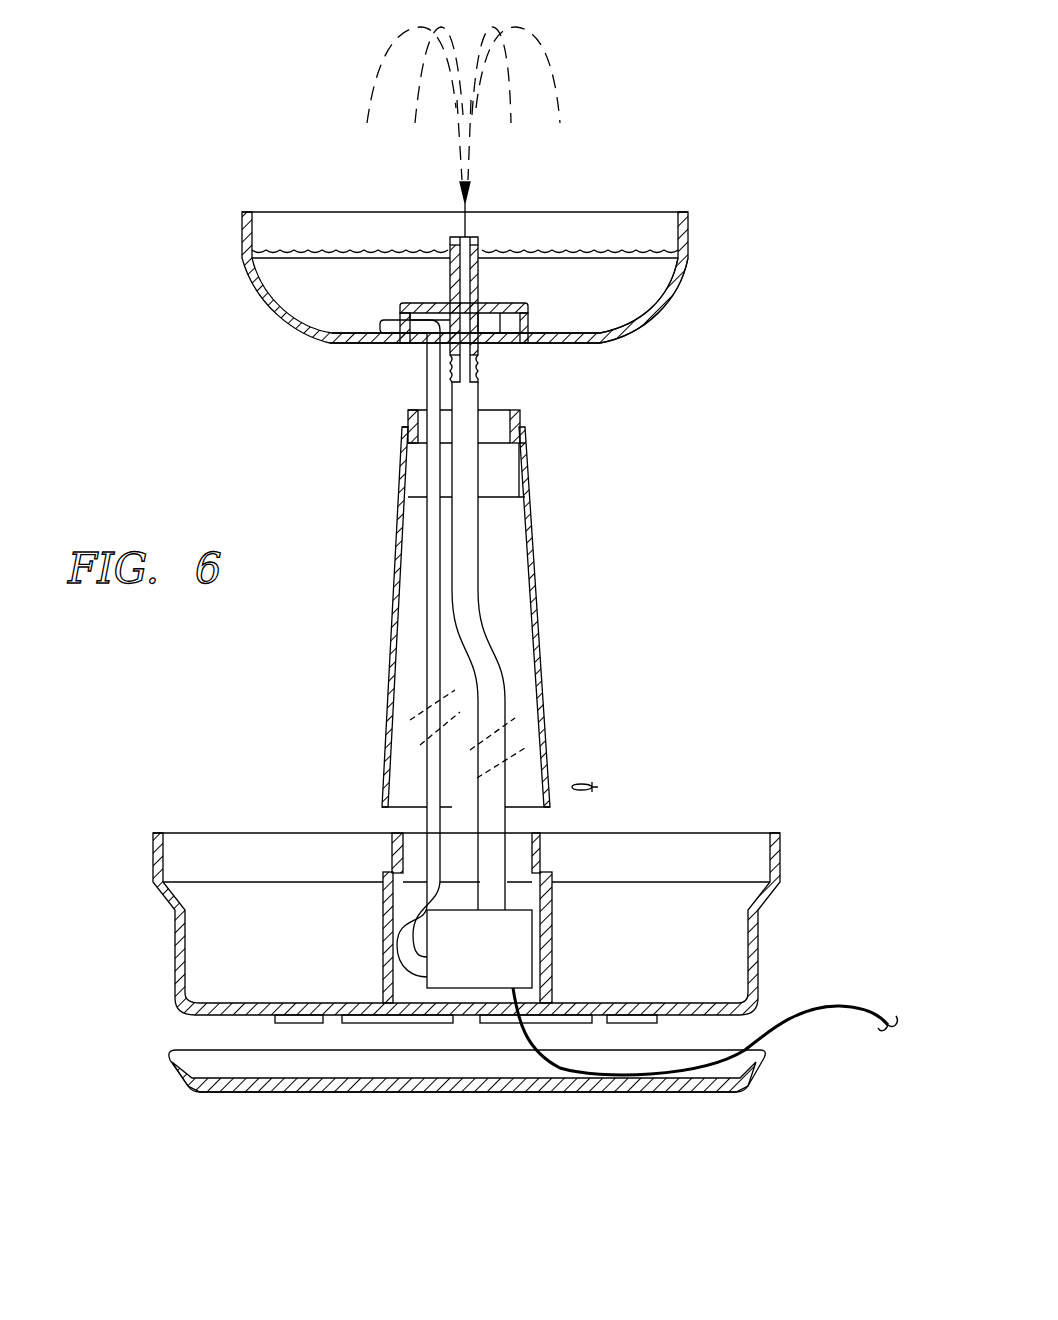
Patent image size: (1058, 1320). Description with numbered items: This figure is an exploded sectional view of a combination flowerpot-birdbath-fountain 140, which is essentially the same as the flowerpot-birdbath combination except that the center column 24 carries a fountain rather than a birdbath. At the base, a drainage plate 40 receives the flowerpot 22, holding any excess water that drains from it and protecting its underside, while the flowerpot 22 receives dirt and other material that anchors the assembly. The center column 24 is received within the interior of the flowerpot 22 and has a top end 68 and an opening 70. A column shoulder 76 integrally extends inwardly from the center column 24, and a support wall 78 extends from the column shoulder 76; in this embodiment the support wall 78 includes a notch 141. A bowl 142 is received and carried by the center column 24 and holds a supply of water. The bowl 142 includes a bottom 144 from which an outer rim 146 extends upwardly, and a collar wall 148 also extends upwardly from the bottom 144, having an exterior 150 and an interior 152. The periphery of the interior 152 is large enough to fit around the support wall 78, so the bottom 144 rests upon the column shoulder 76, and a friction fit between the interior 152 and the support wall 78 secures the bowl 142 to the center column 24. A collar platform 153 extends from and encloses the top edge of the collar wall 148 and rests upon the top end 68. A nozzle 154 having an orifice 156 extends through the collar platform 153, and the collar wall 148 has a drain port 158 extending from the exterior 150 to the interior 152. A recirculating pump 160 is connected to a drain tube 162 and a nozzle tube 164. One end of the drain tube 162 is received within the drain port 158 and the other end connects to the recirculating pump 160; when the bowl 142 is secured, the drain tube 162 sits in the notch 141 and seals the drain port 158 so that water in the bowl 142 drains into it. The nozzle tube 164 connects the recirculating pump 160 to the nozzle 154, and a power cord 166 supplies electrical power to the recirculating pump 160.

The combination flowerpot-birdbath-fountain 140 is at (796, 484).
The bowl 142 is at (696, 232).
The bottom 144 is at (576, 345).
The outer rim 146 is at (672, 283).
The collar wall 148 is at (535, 311).
The exterior 150 is at (528, 330).
The interior 152 is at (512, 334).
The collar platform 153 is at (428, 300).
The nozzle 154 is at (480, 248).
The orifice 156 is at (470, 237).
The drain port 158 is at (388, 321).
The notch 141 is at (408, 413).
The column shoulder 76 is at (402, 429).
The top end 68 is at (522, 410).
The opening 70 is at (491, 423).
The support wall 78 is at (522, 440).
The center column 24 is at (576, 578).
The drain tube 162 is at (425, 628).
The nozzle tube 164 is at (492, 645).
The recirculating pump 160 is at (425, 975).
The flowerpot 22 is at (820, 836).
The power cord 166 is at (812, 1005).
The drainage plate 40 is at (242, 1095).